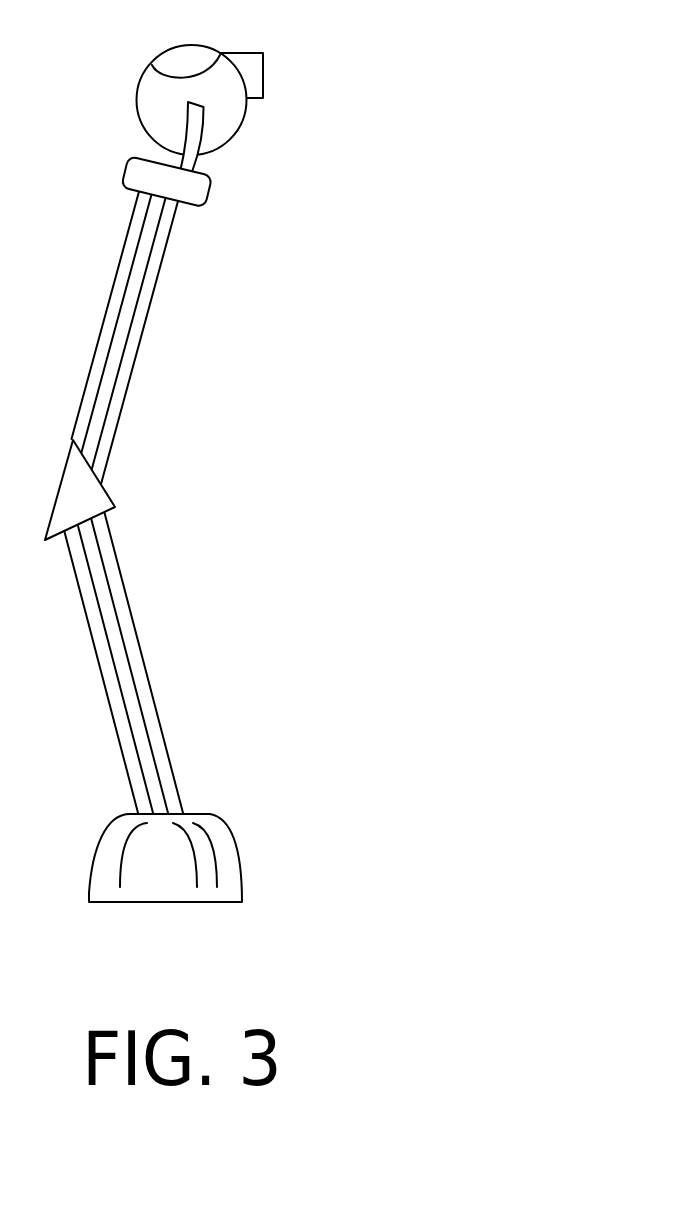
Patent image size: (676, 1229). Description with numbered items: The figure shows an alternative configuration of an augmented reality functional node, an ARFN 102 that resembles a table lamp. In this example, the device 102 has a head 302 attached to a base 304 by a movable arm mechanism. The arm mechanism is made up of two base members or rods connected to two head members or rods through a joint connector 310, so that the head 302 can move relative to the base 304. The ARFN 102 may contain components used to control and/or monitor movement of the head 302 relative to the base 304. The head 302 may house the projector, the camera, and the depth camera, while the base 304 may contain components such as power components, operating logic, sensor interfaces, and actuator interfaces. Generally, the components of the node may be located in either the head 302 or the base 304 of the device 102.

The ARFN 102 is at (423, 330).
The head 302 is at (237, 137).
The base 304 is at (242, 858).
The joint connector 310 is at (88, 498).